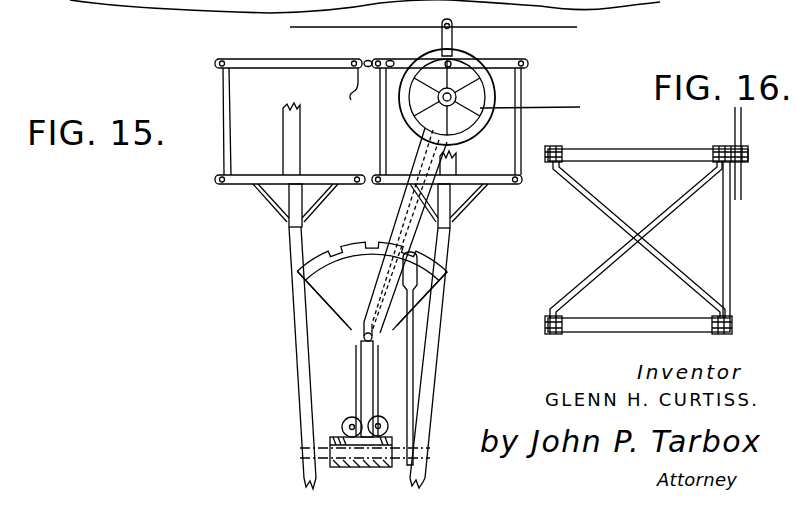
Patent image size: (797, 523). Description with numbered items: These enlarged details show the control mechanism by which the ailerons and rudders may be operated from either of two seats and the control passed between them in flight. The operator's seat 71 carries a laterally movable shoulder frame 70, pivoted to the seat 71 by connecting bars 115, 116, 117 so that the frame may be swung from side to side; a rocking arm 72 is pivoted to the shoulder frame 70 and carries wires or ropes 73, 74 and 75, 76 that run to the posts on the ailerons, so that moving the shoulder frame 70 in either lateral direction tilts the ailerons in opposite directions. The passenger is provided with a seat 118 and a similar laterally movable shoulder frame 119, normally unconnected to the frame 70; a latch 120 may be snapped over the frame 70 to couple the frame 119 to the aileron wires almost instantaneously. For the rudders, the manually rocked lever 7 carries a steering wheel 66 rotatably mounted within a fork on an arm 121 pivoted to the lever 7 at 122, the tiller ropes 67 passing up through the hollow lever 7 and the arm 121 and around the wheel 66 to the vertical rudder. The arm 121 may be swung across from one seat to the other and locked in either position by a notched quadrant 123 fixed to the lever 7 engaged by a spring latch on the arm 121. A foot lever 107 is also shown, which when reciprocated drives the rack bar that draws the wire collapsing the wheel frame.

In FIG. 15, the lever 7 is at (360, 380).
In FIG. 15, the steering wheel 66 is at (485, 117).
In FIG. 15, the tiller ropes 67 is at (342, 420).
In FIG. 15, the shoulder frame 70 is at (518, 53).
In FIG. 16, the shoulder frame 70 is at (633, 153).
In FIG. 15, the seat 71 is at (487, 182).
In FIG. 16, the seat 71 is at (665, 325).
In FIG. 15, the rocking arm 72 is at (455, 41).
In FIG. 16, the rocking arm 72 is at (735, 128).
In FIG. 15, the wire or rope 73 is at (335, 23).
In FIG. 15, the wire or rope 74 is at (538, 28).
In FIG. 15, the wire or rope 75 is at (405, 232).
In FIG. 15, the wire or rope 76 is at (573, 107).
In FIG. 15, the foot lever 107 is at (408, 385).
In FIG. 16, the connecting bar 115 is at (723, 243).
In FIG. 15, the connecting bar 116 is at (520, 172).
In FIG. 16, the connecting bar 116 is at (677, 207).
In FIG. 15, the connecting bar 117 is at (523, 77).
In FIG. 16, the connecting bar 117 is at (580, 188).
In FIG. 15, the passenger seat 118 is at (333, 182).
In FIG. 15, the shoulder frame 119 is at (286, 68).
In FIG. 15, the latch 120 is at (350, 100).
In FIG. 15, the arm 121 is at (400, 245).
In FIG. 15, the pivot 122 is at (373, 336).
In FIG. 15, the quadrant 123 is at (355, 241).